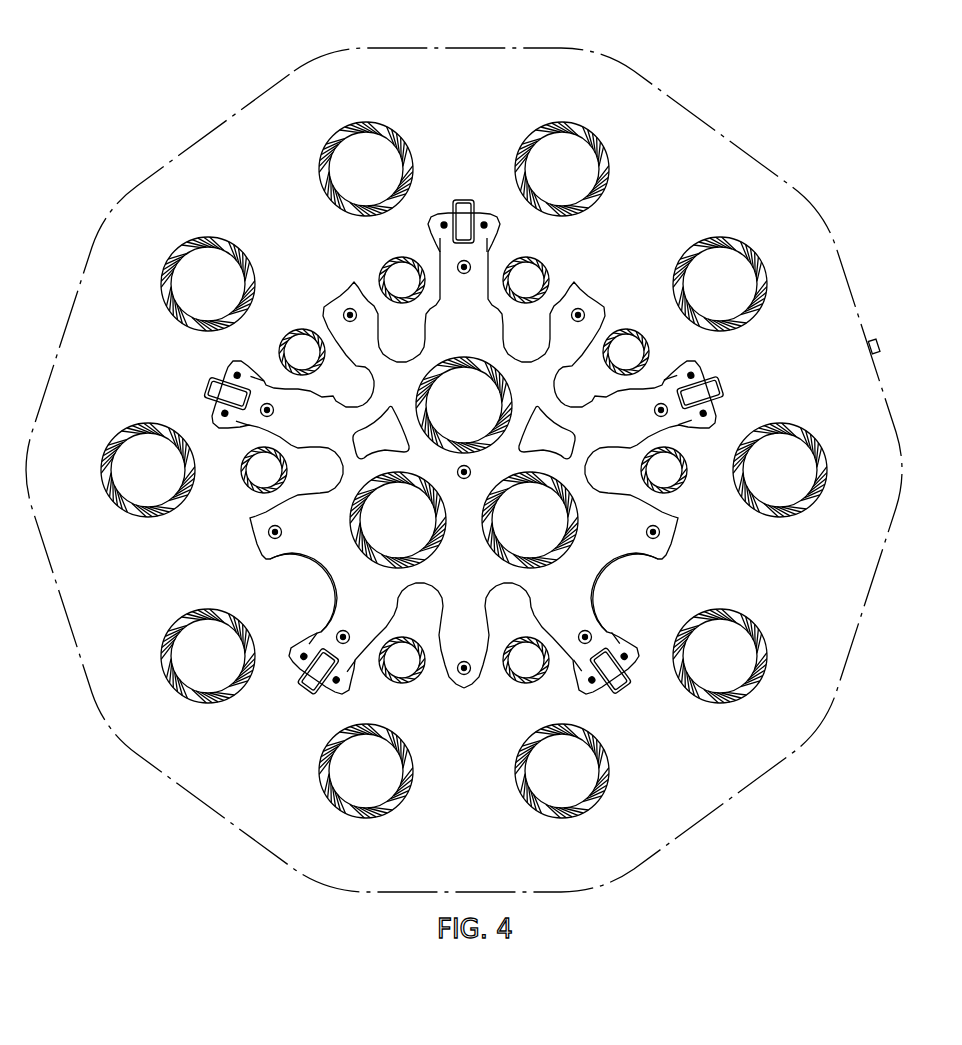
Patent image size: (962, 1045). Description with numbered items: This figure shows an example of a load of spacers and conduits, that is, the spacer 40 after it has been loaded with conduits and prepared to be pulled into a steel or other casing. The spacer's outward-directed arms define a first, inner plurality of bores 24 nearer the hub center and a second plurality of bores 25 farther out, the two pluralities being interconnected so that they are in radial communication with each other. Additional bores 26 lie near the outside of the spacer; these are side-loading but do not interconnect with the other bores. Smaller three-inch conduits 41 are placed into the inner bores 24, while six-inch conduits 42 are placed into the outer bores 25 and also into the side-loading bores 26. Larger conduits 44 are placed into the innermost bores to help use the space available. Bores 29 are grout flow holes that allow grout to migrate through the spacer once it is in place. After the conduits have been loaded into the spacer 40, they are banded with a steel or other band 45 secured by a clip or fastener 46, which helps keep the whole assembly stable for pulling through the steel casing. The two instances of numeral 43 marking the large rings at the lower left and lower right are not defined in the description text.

The first, inner plurality of bores 24 is at (506, 590).
The second plurality of bores 25 is at (488, 291).
The additional bores 26 is at (653, 572).
The bores or flow holes 29 is at (396, 445).
The assembled spacers 40 is at (672, 197).
The smaller conduits 41 is at (685, 490).
The conduits 42 is at (797, 431).
The large tube 43 is at (202, 703).
The larger conduits 44 is at (373, 515).
The band 45 is at (877, 600).
The clip or fastener 46 is at (878, 346).